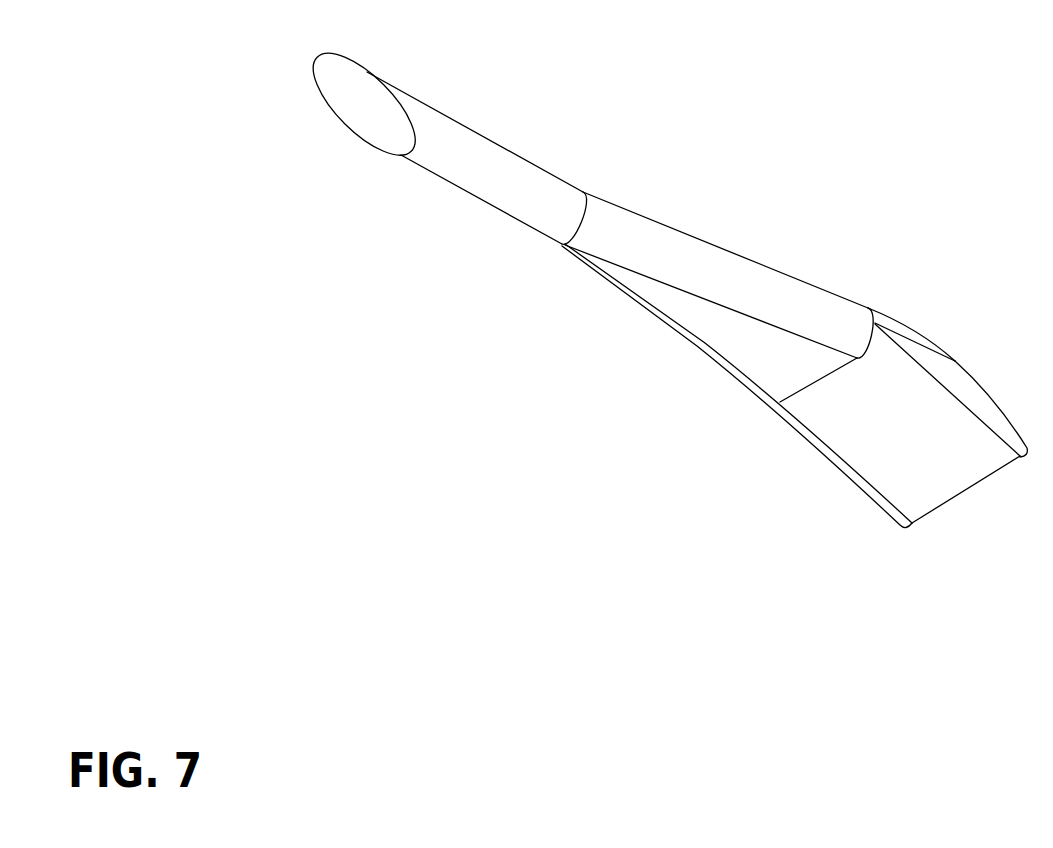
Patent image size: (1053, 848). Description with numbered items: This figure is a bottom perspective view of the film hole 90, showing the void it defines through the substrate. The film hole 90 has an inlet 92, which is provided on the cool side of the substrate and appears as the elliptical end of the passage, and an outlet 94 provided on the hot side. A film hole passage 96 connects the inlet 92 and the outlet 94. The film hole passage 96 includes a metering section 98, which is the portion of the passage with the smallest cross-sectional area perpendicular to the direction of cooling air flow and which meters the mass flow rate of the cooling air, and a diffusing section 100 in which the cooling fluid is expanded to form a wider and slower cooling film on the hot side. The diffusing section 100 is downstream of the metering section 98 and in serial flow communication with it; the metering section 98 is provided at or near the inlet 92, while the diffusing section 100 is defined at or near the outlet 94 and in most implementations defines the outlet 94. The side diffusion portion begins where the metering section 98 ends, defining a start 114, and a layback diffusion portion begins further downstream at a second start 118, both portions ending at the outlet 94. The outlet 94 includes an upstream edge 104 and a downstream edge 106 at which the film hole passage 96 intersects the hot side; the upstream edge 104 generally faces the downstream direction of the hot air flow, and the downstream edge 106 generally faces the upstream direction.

The film hole 90 is at (675, 362).
The inlet 92 is at (368, 127).
The outlet 94 is at (996, 407).
The film hole passage 96 is at (751, 349).
The metering section 98 is at (332, 25).
The diffusing section 100 is at (918, 235).
The upstream edge 104 is at (901, 321).
The downstream edge 106 is at (992, 478).
The start of the side diffusion portion 114 is at (583, 192).
The second start 118 is at (868, 308).